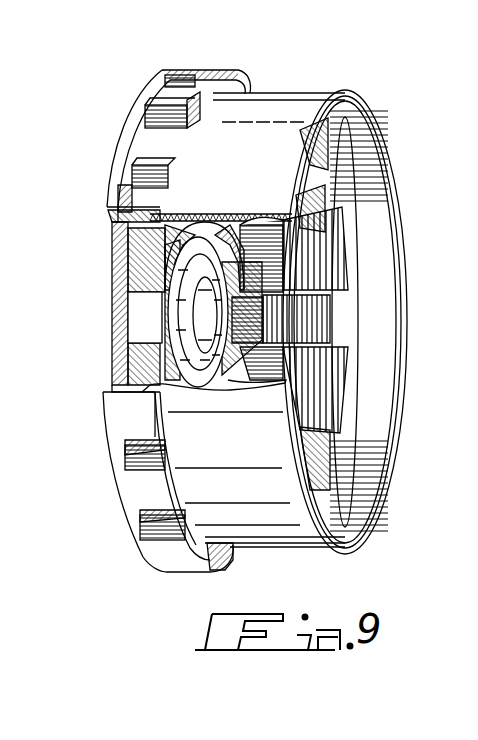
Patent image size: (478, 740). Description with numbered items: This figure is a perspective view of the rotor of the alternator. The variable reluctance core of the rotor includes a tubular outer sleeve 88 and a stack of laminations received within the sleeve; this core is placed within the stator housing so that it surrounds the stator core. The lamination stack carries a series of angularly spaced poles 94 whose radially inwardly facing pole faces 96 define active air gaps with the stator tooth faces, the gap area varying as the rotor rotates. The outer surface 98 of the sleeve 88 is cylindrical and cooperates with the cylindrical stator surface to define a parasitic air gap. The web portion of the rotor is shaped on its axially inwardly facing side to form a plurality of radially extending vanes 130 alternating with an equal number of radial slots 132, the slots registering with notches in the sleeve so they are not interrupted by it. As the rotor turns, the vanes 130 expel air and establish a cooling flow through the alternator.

The tubular outer sleeve 88 is at (346, 100).
The poles 94 is at (343, 328).
The pole faces 96 is at (340, 307).
The outer surface 98 is at (253, 93).
The vanes 130 is at (140, 237).
The radial slots 132 is at (143, 118).